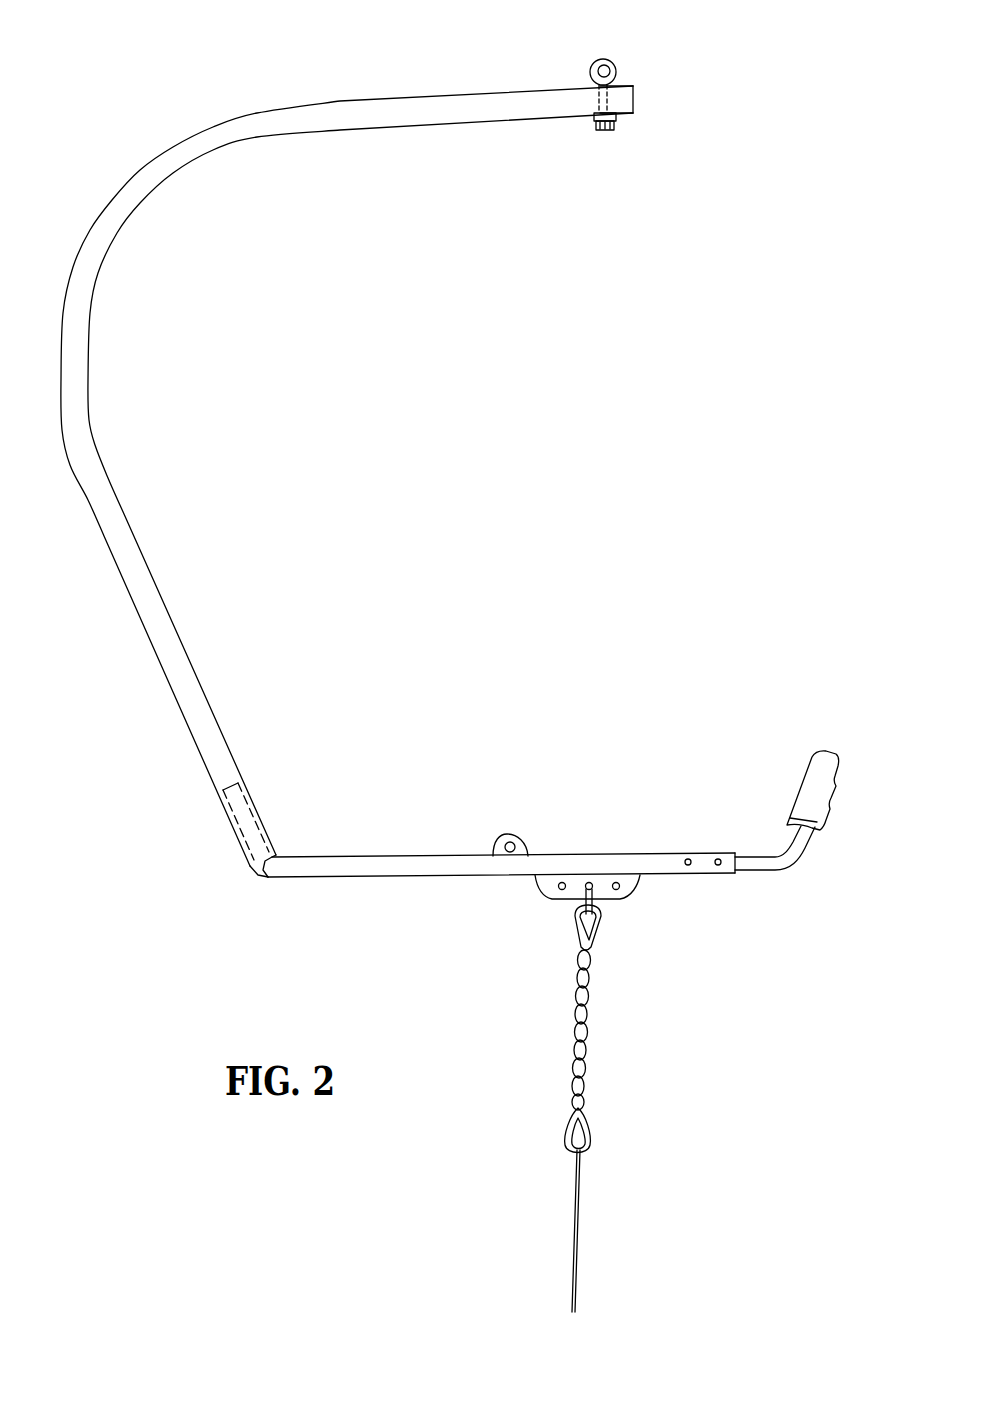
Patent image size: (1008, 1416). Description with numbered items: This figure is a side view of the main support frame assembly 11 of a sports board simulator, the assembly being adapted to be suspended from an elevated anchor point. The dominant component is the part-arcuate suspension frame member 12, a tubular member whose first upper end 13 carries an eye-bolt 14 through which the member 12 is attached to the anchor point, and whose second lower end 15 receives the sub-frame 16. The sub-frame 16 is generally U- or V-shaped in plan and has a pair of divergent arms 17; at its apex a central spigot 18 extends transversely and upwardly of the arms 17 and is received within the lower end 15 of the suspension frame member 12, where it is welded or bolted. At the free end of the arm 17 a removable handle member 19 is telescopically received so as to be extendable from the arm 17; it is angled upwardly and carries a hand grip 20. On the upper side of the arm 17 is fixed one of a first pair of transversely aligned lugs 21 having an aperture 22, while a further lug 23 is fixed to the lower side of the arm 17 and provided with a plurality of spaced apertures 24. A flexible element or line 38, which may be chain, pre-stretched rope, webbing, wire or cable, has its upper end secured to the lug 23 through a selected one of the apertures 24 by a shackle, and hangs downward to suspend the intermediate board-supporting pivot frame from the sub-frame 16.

The main support frame assembly 11 is at (650, 342).
The suspension frame member 12 is at (90, 510).
The first upper end 13 is at (636, 97).
The eye-bolt 14 is at (590, 62).
The second lower end 15 is at (233, 825).
The sub-frame 16 is at (586, 834).
The arms 17 is at (393, 868).
The central spigot 18 is at (252, 818).
The handle members 19 is at (785, 873).
The hand grips 20 is at (822, 789).
The lugs 21 is at (500, 834).
The apertures 22 is at (495, 845).
The further lugs 23 is at (628, 896).
The spaced apertures 24 is at (590, 890).
The elements or lines 38 is at (557, 1083).